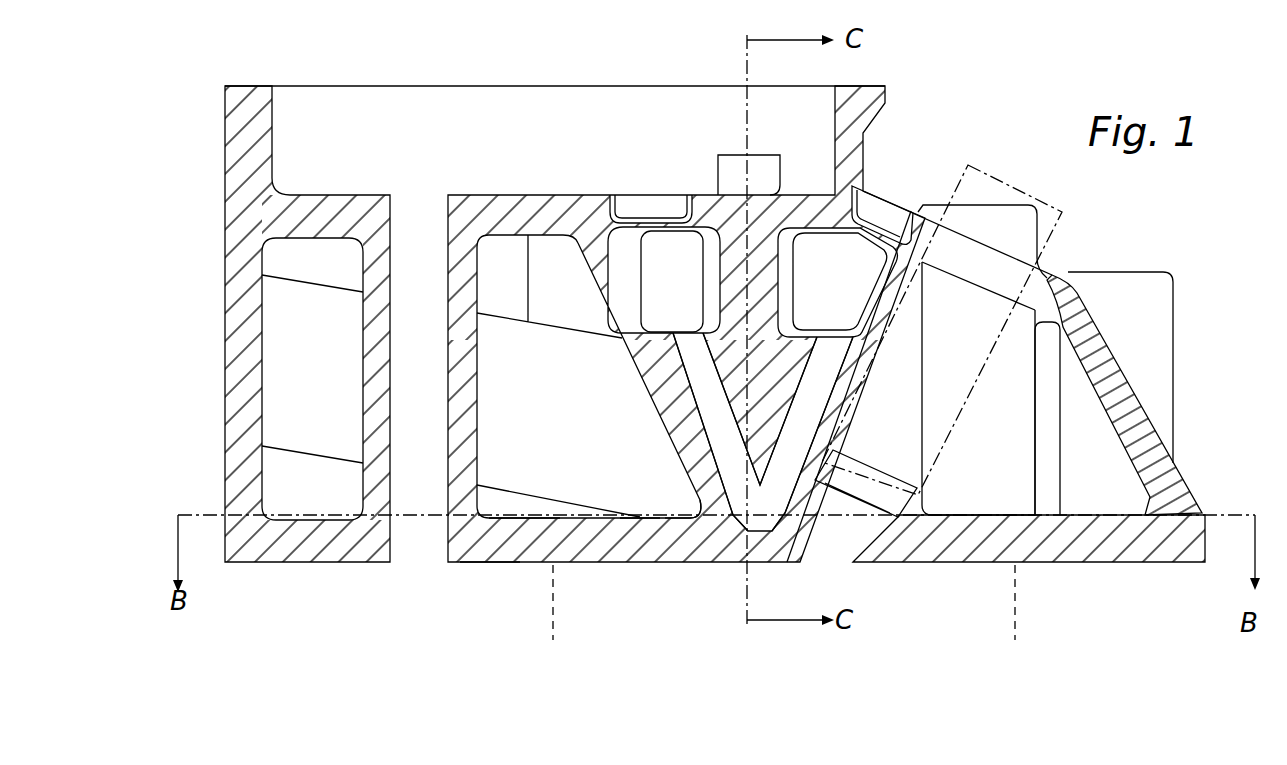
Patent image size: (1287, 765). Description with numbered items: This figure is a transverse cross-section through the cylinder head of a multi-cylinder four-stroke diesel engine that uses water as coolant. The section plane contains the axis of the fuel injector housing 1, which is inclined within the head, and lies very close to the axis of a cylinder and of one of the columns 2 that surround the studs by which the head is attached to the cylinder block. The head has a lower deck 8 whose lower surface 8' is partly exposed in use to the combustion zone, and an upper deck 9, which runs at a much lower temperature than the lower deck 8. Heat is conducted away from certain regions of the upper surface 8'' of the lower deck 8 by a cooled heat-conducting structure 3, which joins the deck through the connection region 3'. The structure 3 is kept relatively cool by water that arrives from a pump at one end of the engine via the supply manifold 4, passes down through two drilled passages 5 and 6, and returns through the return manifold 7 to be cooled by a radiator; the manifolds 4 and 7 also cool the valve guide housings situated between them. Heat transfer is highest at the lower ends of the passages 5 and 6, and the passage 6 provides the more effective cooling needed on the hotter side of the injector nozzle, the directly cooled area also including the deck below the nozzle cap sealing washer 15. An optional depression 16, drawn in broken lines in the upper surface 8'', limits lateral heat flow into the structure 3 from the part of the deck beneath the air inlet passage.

The fuel injector housing 1 is at (900, 438).
The column 2 is at (470, 414).
The cooled heat-conducting structure 3 is at (707, 409).
The connection region 3' is at (589, 376).
The supply manifold 4 is at (675, 286).
The drilled passage 5 is at (712, 396).
The drilled passage 6 is at (833, 378).
The return manifold 7 is at (845, 286).
The lower deck 8 is at (633, 564).
The lower surface 8' is at (475, 586).
The upper surface 8'' is at (524, 484).
The upper deck 9 is at (570, 200).
The nozzle cap sealing washer 15 is at (900, 517).
The depression 16 is at (688, 535).